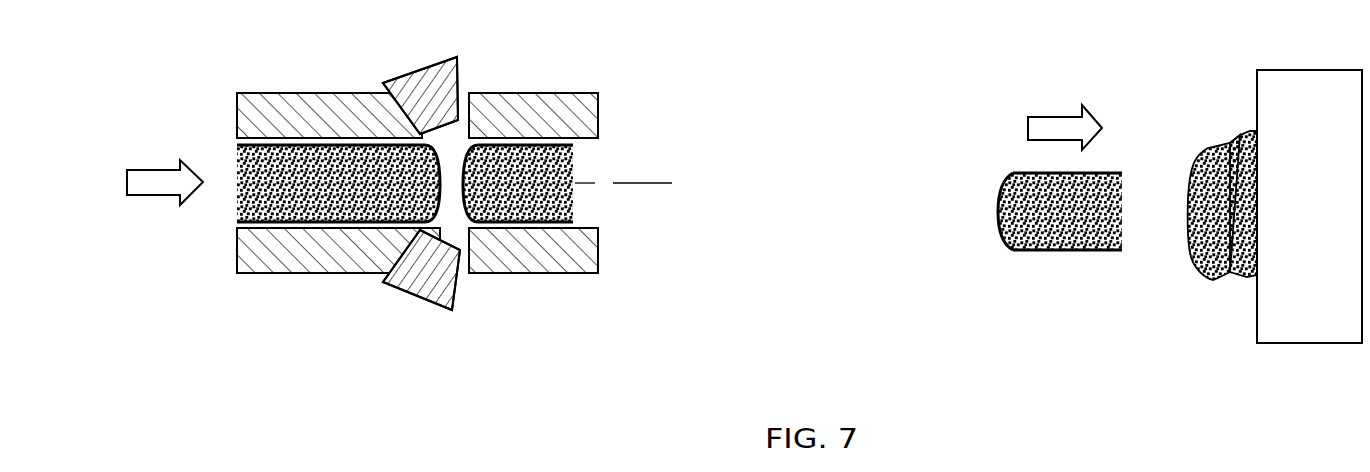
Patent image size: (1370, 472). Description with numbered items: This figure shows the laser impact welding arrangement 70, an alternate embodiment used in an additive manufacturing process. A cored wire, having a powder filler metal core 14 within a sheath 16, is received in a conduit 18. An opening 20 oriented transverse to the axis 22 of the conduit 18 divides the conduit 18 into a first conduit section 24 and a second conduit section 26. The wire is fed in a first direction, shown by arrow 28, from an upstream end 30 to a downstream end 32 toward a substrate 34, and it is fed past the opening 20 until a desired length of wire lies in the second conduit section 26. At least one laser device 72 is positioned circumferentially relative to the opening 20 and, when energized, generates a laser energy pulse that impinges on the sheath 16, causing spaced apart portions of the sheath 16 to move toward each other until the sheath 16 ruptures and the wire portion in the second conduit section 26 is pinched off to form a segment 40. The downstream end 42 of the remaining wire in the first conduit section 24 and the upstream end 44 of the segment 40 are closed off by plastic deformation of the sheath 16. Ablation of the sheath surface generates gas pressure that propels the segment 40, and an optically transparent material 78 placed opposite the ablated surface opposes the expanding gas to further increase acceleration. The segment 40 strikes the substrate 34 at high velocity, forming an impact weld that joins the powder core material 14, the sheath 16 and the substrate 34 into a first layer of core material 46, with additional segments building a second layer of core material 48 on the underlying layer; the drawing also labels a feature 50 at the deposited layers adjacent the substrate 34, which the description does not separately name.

The powder filler metal core 14 is at (253, 200).
The sheath 16 is at (243, 141).
The conduit 18 is at (573, 108).
The opening 20 is at (447, 153).
The axis 22 is at (660, 184).
The first conduit section 24 is at (313, 268).
The second conduit section 26 is at (527, 273).
The arrow 28 is at (153, 182).
The upstream end 30 is at (198, 113).
The downstream end 32 is at (705, 88).
The substrate 34 is at (1256, 88).
The wire segment 40 is at (573, 197).
The downstream end 42 is at (395, 290).
The upstream end 44 is at (493, 273).
The first layer of core material 46 is at (1245, 277).
The second layer of core material 48 is at (1202, 278).
The contact surface 50 is at (1250, 130).
The laser impact welding arrangement 70 is at (658, 137).
The laser device 72 is at (423, 77).
The optically transparent material 78 is at (378, 146).